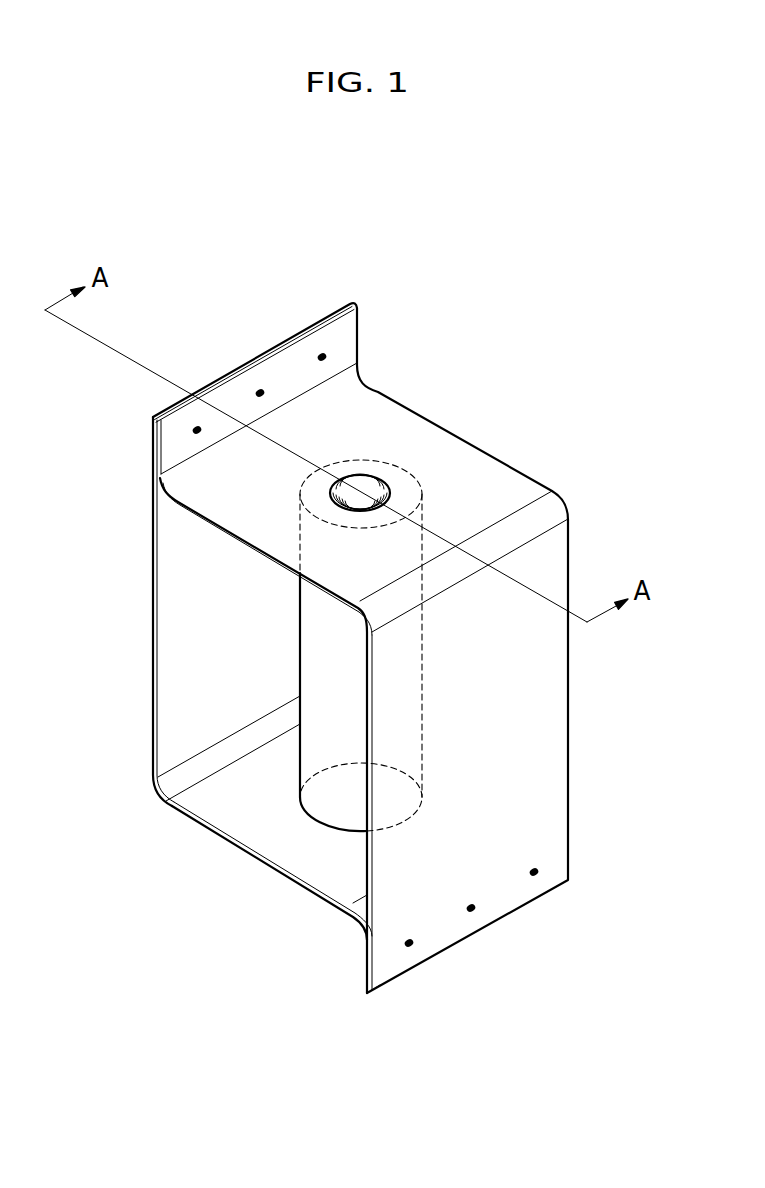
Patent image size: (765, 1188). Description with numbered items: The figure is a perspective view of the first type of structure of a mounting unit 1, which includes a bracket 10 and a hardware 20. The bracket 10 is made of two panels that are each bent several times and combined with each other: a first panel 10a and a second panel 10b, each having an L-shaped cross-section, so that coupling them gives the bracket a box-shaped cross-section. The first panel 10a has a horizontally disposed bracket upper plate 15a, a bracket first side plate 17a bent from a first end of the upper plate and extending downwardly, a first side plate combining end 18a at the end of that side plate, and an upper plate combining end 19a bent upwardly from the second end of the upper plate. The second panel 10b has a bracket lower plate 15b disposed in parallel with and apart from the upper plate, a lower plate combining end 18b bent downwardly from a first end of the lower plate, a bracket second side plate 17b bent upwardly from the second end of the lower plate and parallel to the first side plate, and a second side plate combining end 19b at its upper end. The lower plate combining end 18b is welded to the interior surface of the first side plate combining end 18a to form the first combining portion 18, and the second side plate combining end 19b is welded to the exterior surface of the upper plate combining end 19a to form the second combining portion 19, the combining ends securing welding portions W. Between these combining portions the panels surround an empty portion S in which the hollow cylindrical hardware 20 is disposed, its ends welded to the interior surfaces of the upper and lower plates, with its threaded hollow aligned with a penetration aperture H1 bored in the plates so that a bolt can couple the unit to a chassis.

The mounting unit 1 is at (411, 247).
The bracket 10 is at (592, 290).
The first panel 10a is at (580, 489).
The second panel 10b is at (100, 727).
The bracket upper plate 15a is at (447, 458).
The bracket lower plate 15b is at (298, 853).
The bracket first side plate 17a is at (545, 740).
The bracket second side plate 17b is at (150, 640).
The first combining portion 18 is at (330, 1074).
The first side plate combining end 18a is at (437, 938).
The lower plate combining end 18b is at (363, 967).
The second combining portion 19 is at (123, 312).
The upper plate combining end 19a is at (230, 406).
The second side plate combining end 19b is at (150, 443).
The hardware 20 is at (315, 745).
The penetration aperture H1 is at (367, 478).
The empty portion S is at (257, 700).
The welding portions W is at (322, 357).